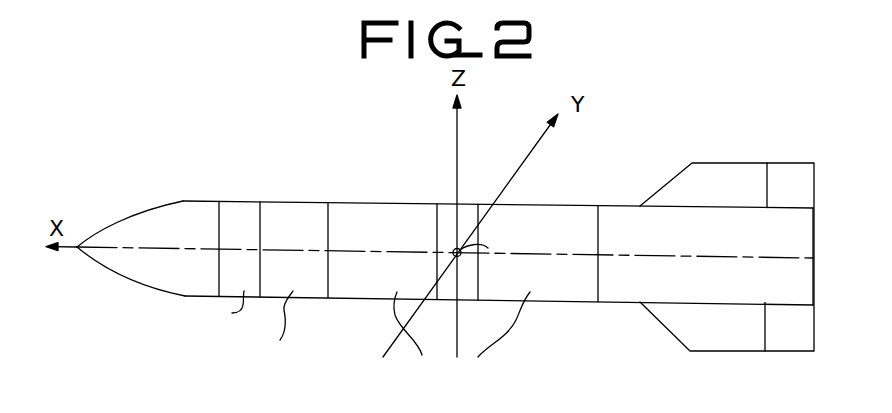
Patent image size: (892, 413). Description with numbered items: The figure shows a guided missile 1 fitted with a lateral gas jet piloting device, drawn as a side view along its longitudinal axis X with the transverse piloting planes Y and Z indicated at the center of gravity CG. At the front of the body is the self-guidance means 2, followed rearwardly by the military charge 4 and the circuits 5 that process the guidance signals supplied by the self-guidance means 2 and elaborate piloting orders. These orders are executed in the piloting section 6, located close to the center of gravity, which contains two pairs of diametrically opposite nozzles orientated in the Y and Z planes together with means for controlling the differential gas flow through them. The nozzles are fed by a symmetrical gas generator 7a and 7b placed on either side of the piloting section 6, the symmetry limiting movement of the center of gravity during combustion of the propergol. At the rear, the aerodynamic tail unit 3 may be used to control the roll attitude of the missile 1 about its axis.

The missile 1 is at (390, 173).
The self-guidance means 2 is at (157, 212).
The aerodynamic tail unit 3 is at (723, 174).
The charge 4 is at (237, 196).
The circuits 5 is at (285, 199).
The piloting section 6 is at (447, 210).
The gas generator 7a is at (362, 213).
The gas generator 7b is at (547, 212).